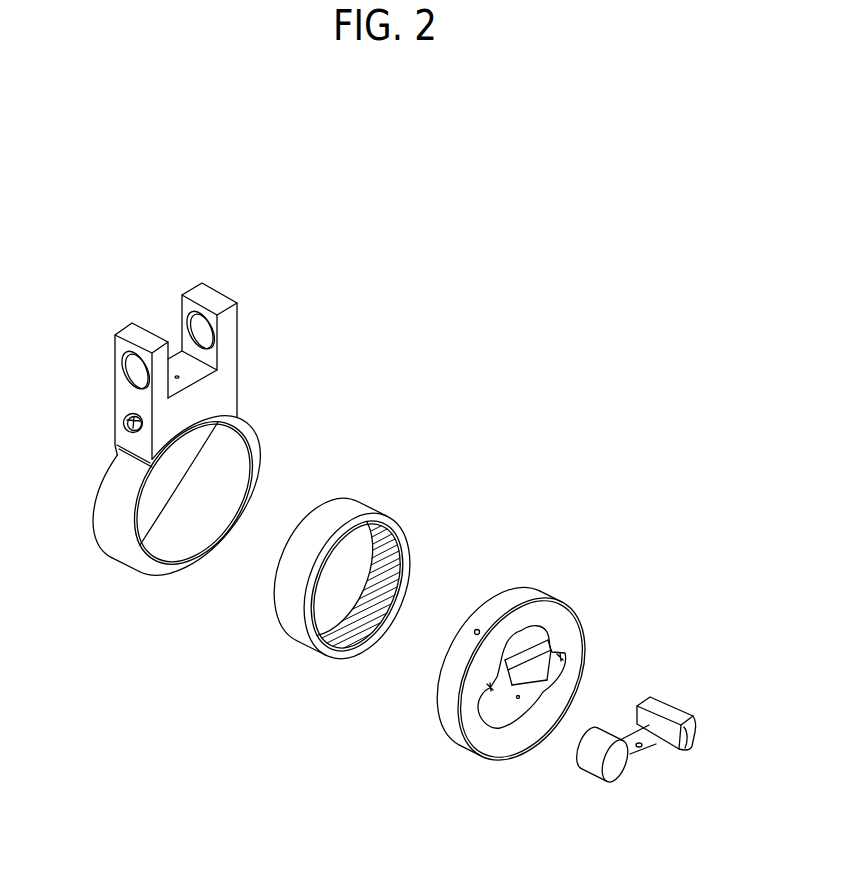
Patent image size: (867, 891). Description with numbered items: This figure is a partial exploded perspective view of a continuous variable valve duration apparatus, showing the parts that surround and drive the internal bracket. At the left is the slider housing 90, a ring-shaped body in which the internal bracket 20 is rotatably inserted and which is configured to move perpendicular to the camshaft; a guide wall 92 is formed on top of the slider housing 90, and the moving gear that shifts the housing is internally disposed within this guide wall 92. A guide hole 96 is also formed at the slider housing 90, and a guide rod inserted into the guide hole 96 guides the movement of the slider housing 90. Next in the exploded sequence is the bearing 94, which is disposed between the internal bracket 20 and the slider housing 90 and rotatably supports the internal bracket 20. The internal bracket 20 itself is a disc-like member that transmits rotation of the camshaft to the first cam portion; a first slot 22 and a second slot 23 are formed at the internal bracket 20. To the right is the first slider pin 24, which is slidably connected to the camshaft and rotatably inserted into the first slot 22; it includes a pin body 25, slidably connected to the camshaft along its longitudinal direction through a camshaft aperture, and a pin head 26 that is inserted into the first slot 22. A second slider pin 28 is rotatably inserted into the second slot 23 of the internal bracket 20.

The slider housing 90 is at (265, 407).
The guide wall 92 is at (197, 293).
The bearing 94 is at (368, 507).
The guide hole 96 is at (126, 421).
The internal bracket 20 is at (516, 653).
The first slot 22 is at (487, 697).
The second slot 23 is at (556, 654).
The first slider pin 24 is at (620, 764).
The pin body 25 is at (625, 727).
The pin head 26 is at (584, 763).
The second slider pin 28 is at (684, 763).